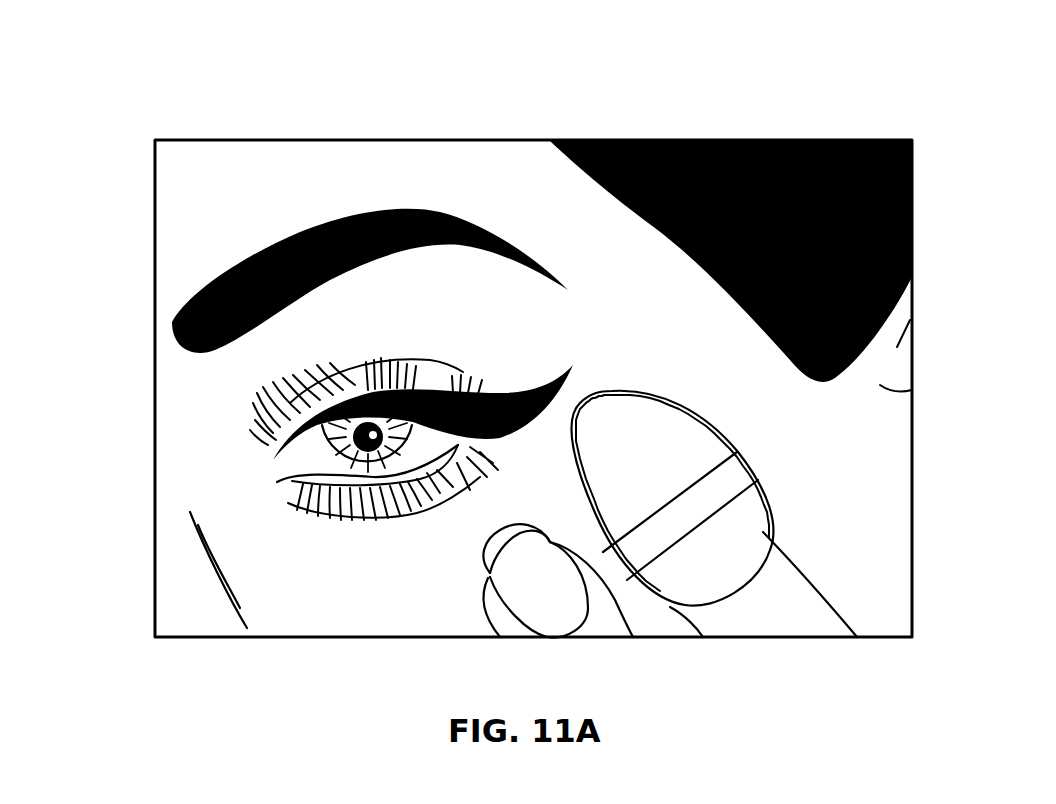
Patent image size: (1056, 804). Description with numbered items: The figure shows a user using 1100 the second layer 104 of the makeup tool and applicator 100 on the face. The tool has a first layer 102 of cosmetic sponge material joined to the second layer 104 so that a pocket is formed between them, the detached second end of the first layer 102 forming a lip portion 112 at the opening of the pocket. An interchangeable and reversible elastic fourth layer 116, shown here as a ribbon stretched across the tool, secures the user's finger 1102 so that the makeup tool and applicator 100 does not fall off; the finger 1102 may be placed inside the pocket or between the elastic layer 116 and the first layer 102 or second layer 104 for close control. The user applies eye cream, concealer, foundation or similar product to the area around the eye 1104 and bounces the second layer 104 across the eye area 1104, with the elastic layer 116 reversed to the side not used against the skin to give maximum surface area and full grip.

The makeup tool and applicator 100 is at (723, 566).
The first layer 102 is at (697, 440).
The second layer 104 is at (672, 403).
The lip portion 112 is at (721, 588).
The fourth layer 116 is at (735, 477).
The using 1100 is at (927, 98).
The finger 1102 is at (808, 613).
The area around the eye 1104 is at (270, 545).